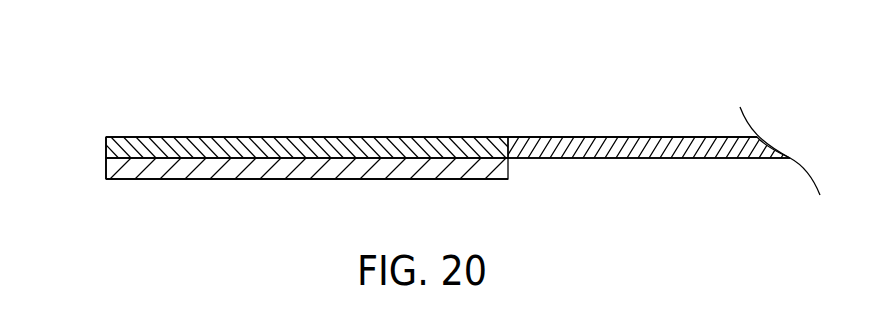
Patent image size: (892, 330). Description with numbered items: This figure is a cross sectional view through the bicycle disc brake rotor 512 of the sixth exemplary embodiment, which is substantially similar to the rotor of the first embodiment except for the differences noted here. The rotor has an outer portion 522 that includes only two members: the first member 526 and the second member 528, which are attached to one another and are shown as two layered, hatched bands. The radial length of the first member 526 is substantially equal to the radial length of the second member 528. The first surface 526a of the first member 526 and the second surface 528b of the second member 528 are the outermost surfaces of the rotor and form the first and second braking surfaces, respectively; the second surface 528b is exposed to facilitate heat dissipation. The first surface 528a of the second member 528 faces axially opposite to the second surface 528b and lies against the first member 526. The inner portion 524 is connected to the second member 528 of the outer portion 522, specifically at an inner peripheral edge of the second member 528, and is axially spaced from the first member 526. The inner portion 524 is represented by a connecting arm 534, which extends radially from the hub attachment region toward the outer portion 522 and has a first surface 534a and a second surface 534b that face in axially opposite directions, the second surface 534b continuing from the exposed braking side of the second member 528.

The bicycle disc brake rotor 512 is at (168, 77).
The outer portion 522 is at (98, 168).
The inner portion 524 is at (649, 171).
The first member 526 is at (127, 182).
The first surface 526a is at (223, 180).
The second member 528 is at (105, 148).
The first surface 528a is at (308, 160).
The second surface 528b is at (370, 137).
The connecting arm 534 is at (572, 160).
The first surface 534a is at (752, 160).
The second surface 534b is at (678, 137).